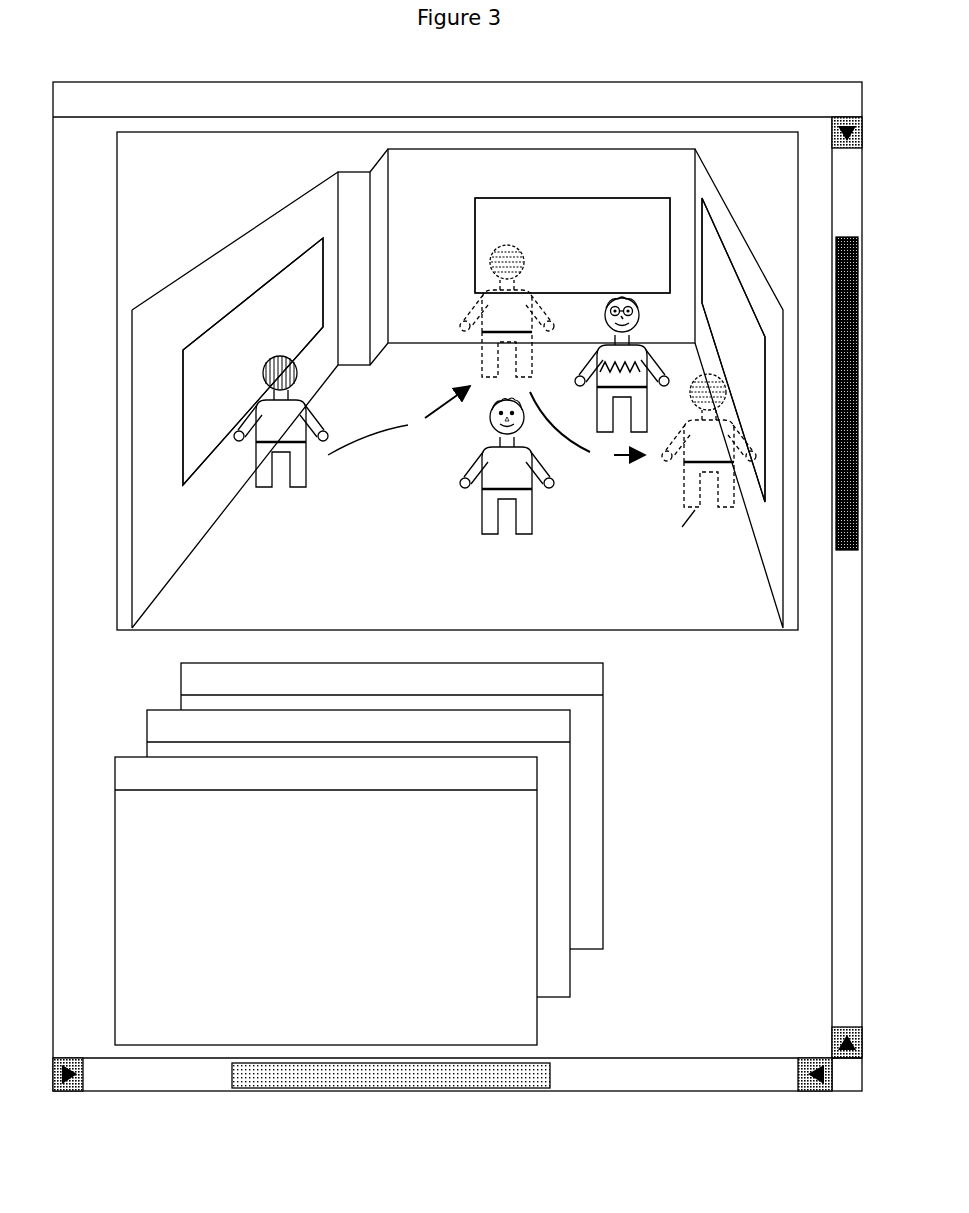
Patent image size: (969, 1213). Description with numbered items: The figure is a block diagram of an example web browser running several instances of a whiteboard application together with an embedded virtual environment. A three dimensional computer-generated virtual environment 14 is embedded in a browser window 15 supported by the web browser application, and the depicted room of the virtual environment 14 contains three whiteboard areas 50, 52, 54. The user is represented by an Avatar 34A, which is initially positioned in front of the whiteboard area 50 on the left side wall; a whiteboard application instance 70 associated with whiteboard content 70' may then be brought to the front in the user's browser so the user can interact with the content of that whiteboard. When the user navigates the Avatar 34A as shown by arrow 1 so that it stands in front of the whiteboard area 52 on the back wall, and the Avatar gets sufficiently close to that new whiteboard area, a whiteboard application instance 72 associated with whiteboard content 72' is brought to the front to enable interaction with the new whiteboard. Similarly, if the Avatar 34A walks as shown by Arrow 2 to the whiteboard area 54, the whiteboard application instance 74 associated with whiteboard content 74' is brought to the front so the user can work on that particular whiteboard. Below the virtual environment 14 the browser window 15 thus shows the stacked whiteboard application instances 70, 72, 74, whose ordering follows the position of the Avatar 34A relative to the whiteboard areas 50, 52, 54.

The browser window 15 is at (575, 78).
The virtual environment 14 is at (178, 156).
The whiteboard area 50 is at (230, 306).
The whiteboard area 52 is at (553, 194).
The whiteboard area 54 is at (736, 255).
The whiteboard content 70' is at (253, 361).
The whiteboard content 72' is at (572, 245).
The whiteboard content 74' is at (733, 350).
The Avatar 34A is at (310, 465).
The arrow 1 is at (399, 420).
The Arrow 2 is at (587, 428).
The whiteboard application instance 70 is at (326, 901).
The whiteboard application instance 72 is at (358, 853).
The whiteboard application instance 74 is at (392, 806).